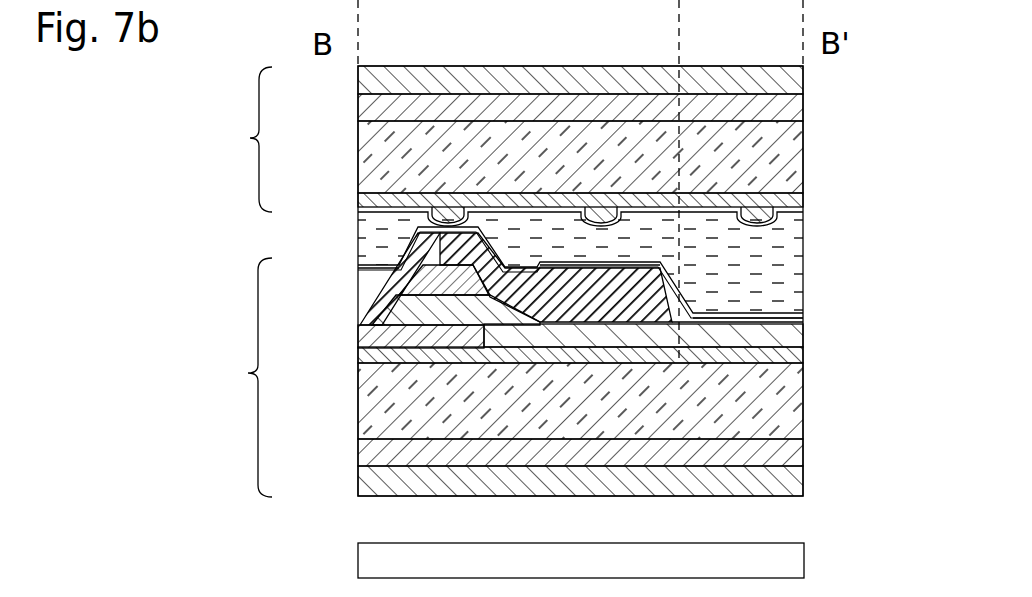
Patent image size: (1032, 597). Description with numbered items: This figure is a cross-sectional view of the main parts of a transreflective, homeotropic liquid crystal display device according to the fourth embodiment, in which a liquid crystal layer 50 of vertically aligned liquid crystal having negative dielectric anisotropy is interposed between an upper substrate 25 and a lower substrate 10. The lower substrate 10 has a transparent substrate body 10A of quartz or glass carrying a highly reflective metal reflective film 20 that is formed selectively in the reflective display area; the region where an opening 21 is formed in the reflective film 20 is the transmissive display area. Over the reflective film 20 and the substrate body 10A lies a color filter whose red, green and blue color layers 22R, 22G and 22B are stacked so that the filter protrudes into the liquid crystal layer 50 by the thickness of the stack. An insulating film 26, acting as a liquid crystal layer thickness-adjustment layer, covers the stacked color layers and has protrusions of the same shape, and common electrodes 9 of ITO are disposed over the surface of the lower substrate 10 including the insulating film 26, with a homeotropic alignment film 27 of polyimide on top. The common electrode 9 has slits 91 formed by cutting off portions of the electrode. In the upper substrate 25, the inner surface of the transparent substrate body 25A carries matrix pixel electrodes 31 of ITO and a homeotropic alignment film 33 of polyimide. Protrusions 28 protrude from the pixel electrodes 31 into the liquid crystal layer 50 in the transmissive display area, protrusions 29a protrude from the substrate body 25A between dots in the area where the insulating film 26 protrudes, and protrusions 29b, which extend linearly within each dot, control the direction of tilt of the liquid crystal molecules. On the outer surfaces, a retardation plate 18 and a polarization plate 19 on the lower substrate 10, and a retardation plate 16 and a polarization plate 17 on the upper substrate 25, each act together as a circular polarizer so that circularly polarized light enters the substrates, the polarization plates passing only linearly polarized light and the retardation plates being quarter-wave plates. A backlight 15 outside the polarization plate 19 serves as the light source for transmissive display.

The upper substrate 25 is at (557, 136).
The polarization plate 17 is at (803, 70).
The retardation plate 16 is at (803, 107).
The substrate body 25A is at (803, 140).
The pixel electrodes 31 is at (803, 198).
The alignment film 33 is at (585, 136).
The protrusions 29a is at (365, 221).
The protrusions 29b is at (600, 214).
The liquid crystal layer 50 is at (803, 240).
The lower substrate 10 is at (558, 382).
The polarization plate 19 is at (795, 483).
The retardation plate 18 is at (795, 450).
The substrate body 10A is at (795, 417).
The color layer 22R is at (803, 360).
The common electrodes 9 is at (803, 322).
The reflective film 20 is at (360, 345).
The color layer 22B is at (372, 340).
The insulating film 26 is at (396, 300).
The color layer 22G is at (368, 312).
The opening 21 is at (676, 300).
The homeotropic alignment film 27 is at (803, 318).
The protrusions 28 is at (790, 264).
The slits 91 is at (358, 268).
The backlight 15 is at (793, 558).